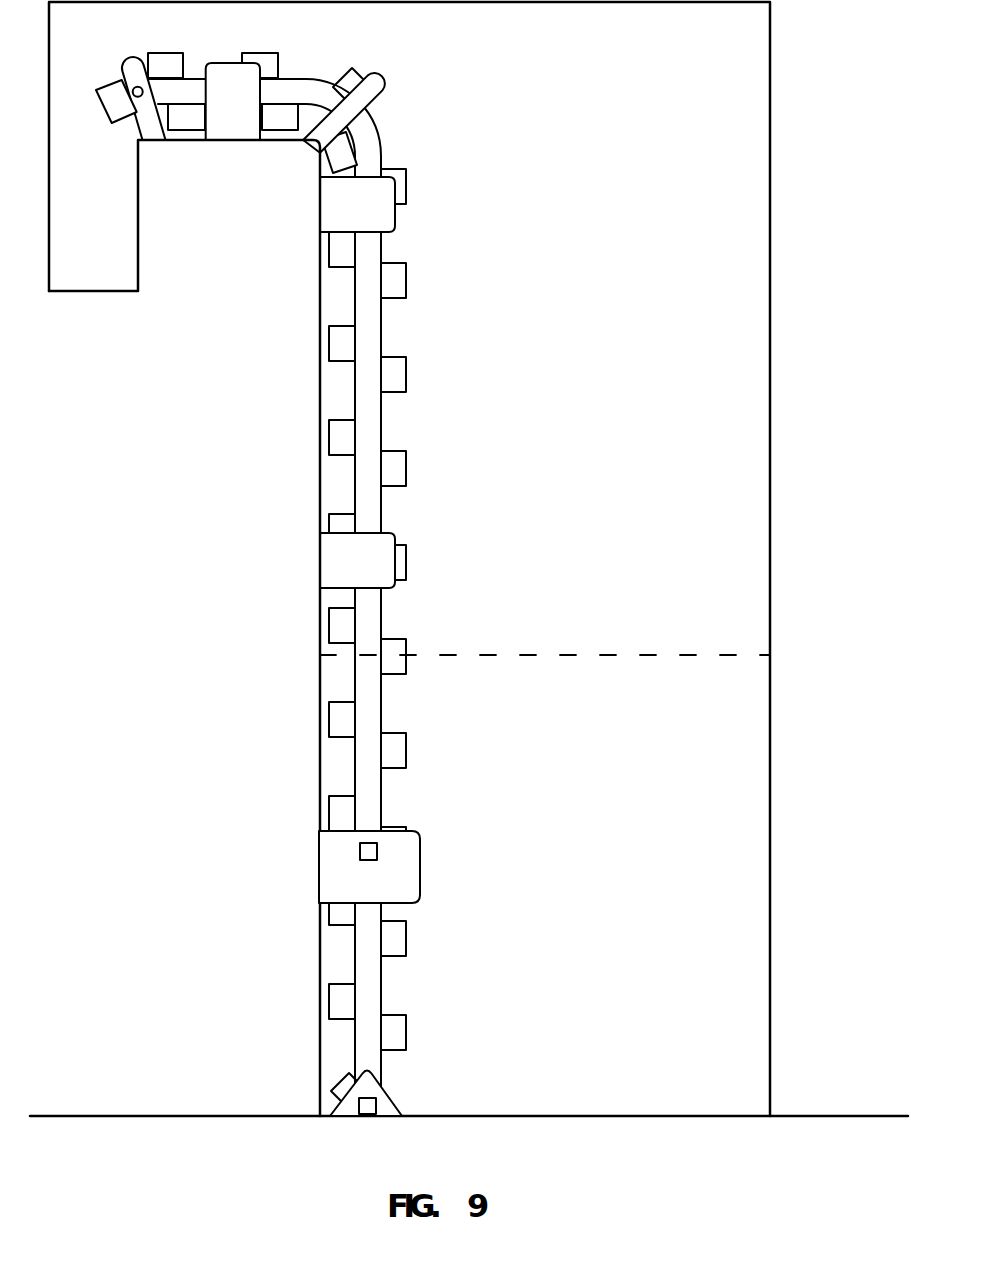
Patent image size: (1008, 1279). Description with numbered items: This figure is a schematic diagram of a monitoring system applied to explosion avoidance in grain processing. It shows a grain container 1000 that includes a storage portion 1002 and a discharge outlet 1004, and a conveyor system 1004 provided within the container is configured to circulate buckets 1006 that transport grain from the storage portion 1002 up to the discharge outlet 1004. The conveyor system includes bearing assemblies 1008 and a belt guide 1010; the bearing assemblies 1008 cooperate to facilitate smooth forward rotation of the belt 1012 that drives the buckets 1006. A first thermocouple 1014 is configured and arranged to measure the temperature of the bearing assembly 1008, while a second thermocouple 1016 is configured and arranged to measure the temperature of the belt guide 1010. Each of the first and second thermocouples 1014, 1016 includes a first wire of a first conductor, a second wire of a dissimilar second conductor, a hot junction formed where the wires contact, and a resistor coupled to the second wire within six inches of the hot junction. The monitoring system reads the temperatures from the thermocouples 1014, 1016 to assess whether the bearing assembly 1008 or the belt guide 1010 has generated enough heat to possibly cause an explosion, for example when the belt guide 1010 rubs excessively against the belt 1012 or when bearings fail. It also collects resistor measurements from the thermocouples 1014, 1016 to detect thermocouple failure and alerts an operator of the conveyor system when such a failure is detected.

The grain container 1000 is at (806, 388).
The storage portion 1002 is at (771, 952).
The discharge outlet / conveyor system 1004 is at (138, 247).
The buckets 1006 is at (398, 935).
The bearing assembly 1008 is at (376, 1088).
The belt guide 1010 is at (420, 848).
The belt 1012 is at (380, 418).
The first thermocouple 1014 is at (362, 1104).
The second thermocouple 1016 is at (360, 850).